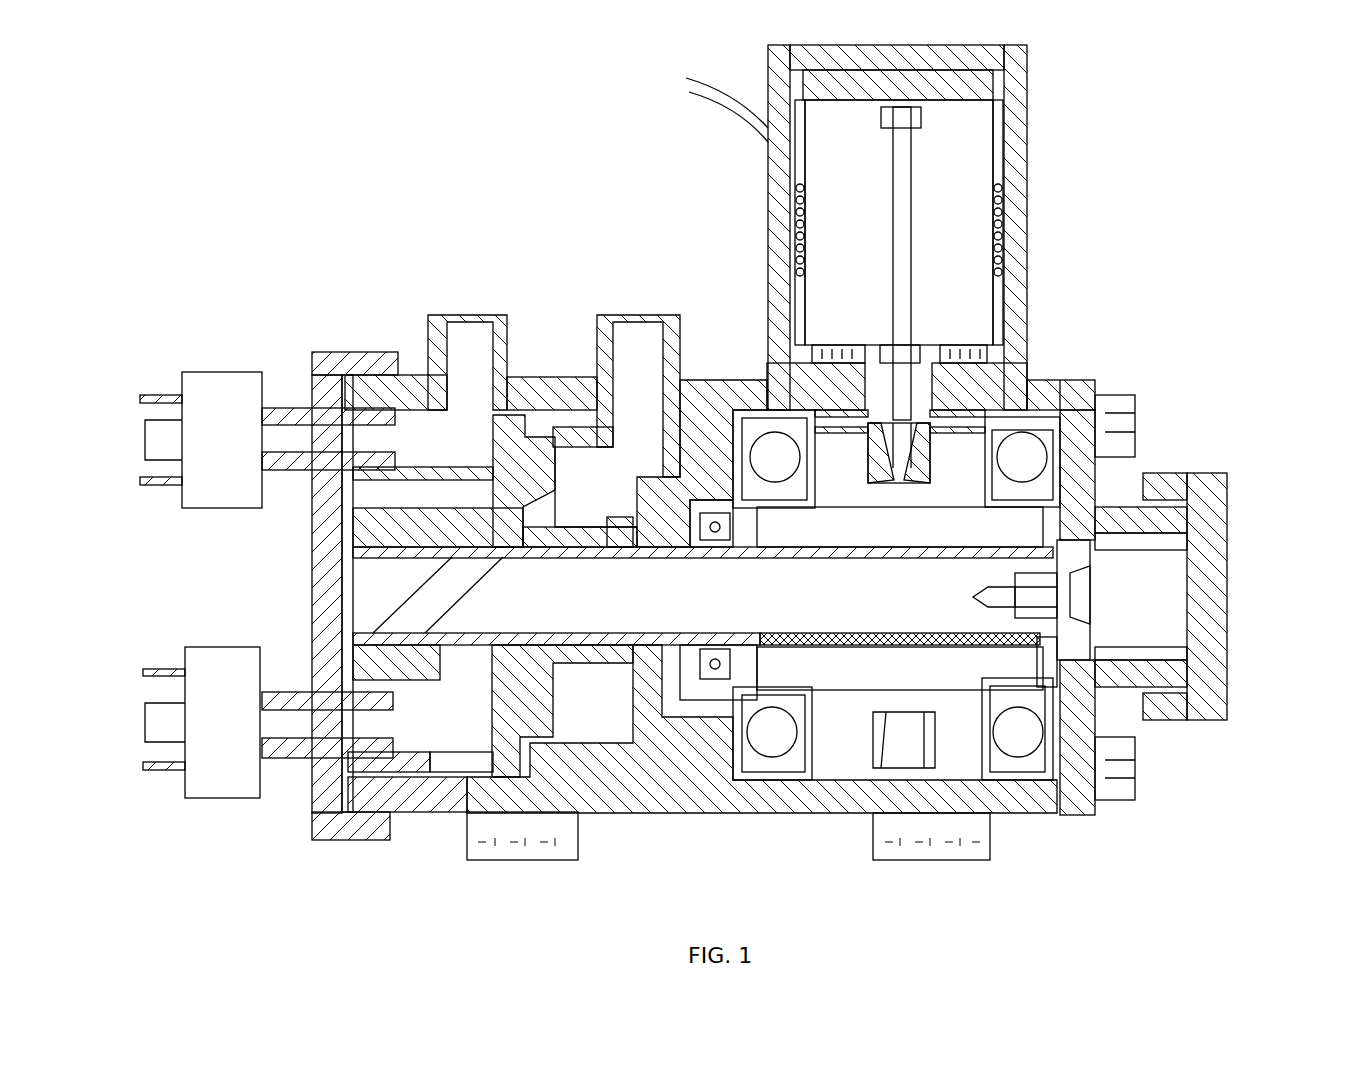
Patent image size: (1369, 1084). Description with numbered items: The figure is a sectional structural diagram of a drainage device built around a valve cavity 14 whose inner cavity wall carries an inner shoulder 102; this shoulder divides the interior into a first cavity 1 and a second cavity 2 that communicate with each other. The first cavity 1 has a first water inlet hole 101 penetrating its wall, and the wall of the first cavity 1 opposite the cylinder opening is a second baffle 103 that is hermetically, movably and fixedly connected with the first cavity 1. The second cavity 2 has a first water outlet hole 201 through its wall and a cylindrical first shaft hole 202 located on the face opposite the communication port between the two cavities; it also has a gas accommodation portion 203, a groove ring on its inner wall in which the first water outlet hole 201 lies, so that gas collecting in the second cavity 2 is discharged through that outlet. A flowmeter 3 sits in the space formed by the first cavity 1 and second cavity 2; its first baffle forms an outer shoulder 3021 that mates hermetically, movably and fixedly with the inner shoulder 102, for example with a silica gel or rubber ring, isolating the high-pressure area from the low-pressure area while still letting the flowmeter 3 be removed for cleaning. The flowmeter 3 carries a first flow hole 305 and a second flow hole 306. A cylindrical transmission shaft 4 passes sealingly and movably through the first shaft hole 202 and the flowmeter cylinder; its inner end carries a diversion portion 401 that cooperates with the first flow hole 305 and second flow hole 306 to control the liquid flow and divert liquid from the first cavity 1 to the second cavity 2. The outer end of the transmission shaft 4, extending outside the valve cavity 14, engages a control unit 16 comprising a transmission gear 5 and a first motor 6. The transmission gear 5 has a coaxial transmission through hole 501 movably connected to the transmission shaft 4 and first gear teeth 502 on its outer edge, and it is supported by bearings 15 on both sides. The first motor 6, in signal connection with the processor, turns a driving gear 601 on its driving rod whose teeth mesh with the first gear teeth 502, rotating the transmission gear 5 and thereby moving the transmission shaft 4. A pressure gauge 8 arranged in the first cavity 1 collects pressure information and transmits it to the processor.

The first cavity 1 is at (420, 433).
The first water inlet hole 101 is at (457, 317).
The inner shoulder 102 is at (590, 410).
The second baffle 103 is at (325, 577).
The valve cavity 14 is at (395, 320).
The second cavity 2 is at (580, 727).
The first water outlet hole 201 is at (643, 317).
The first shaft hole 202 is at (720, 620).
The gas accommodation portion 203 is at (655, 748).
The flowmeter 3 is at (262, 778).
The first flow hole 305 is at (340, 765).
The second flow hole 306 is at (538, 530).
The outer shoulder 3021 is at (525, 770).
The transmission shaft 4 is at (905, 752).
The diversion portion 401 is at (408, 617).
The transmission gear 5 is at (1023, 400).
The transmission through hole 501 is at (1090, 810).
The first gear teeth 502 is at (893, 743).
The first motor 6 is at (968, 228).
The driving gear 601 is at (957, 460).
The pressure gauge 8 is at (345, 440).
The bearings 15 is at (1020, 727).
The control unit 16 is at (1291, 258).